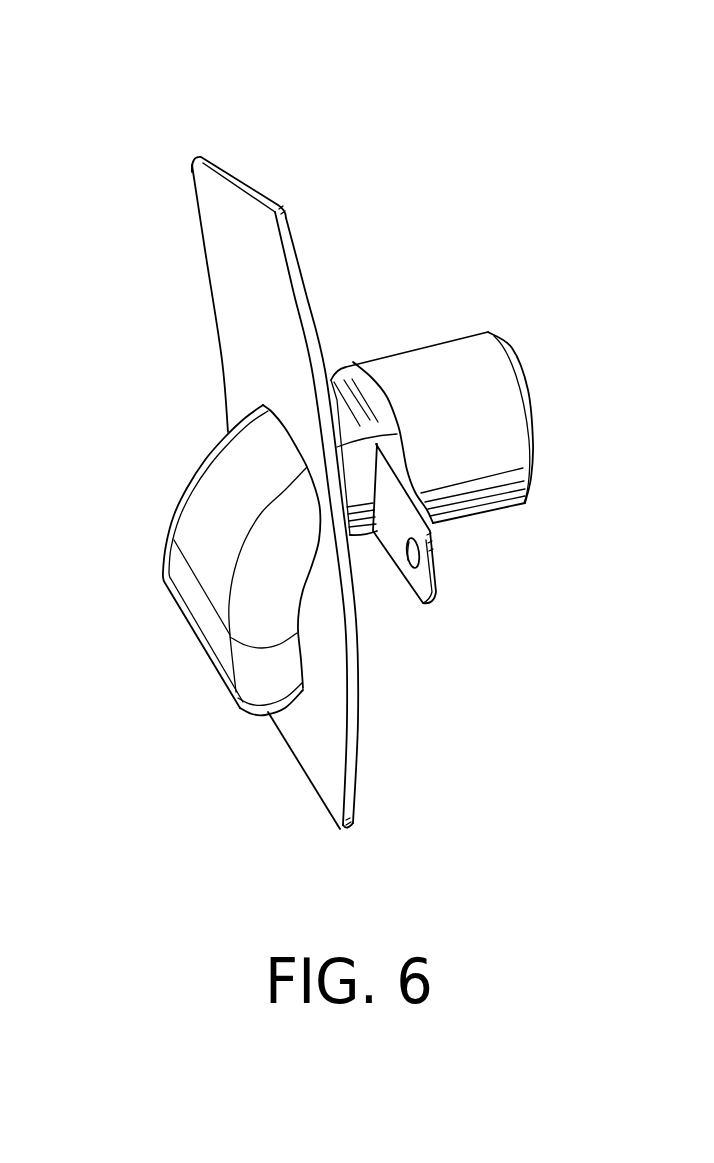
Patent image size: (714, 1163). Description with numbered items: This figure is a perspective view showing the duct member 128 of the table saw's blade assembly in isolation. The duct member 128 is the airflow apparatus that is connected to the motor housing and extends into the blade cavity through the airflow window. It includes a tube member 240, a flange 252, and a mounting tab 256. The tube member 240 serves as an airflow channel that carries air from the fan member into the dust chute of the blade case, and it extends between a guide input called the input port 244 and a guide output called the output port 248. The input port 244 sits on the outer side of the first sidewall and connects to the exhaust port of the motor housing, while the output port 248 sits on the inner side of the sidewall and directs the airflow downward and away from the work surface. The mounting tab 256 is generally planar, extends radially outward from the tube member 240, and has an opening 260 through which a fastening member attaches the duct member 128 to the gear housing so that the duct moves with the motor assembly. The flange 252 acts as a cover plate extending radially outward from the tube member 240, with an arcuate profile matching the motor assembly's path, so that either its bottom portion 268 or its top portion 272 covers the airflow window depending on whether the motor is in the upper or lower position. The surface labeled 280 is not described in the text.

The duct member 128 is at (460, 127).
The tube member 240 is at (448, 363).
The input port 244 is at (526, 397).
The output port 248 is at (193, 641).
The flange 252 is at (240, 237).
The mounting tab 256 is at (397, 540).
The opening 260 is at (420, 553).
The bottom portion 268 is at (355, 773).
The top portion 272 is at (302, 263).
The front surface of plate 280 is at (325, 467).